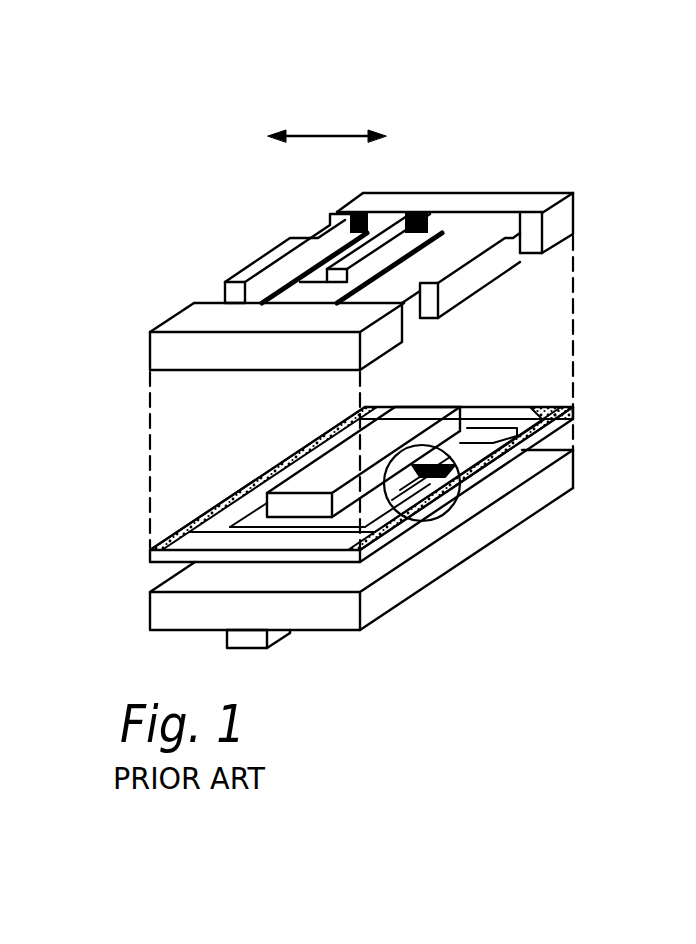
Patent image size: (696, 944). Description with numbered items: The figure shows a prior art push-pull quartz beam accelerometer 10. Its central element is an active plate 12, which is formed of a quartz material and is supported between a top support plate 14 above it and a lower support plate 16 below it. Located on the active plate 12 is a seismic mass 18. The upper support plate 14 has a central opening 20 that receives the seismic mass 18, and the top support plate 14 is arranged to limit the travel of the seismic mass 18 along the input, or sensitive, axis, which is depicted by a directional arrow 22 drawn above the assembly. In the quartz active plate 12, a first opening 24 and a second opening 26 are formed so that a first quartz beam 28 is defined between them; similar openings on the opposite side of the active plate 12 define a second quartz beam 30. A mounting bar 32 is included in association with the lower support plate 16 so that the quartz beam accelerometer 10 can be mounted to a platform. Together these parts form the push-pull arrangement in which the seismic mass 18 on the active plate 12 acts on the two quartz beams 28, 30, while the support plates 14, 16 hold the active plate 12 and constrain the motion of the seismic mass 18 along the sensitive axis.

The push-pull quartz beam accelerometer 10 is at (164, 210).
The active plate 12 is at (500, 468).
The top support plate 14 is at (398, 281).
The lower support plate 16 is at (390, 596).
The seismic mass 18 is at (402, 494).
The central opening 20 is at (398, 248).
The directional arrow 22 is at (323, 134).
The first opening 24 is at (569, 412).
The second opening 26 is at (392, 484).
The first quartz beam 28 is at (438, 503).
The second quartz beam 30 is at (297, 470).
The mounting bar 32 is at (283, 637).